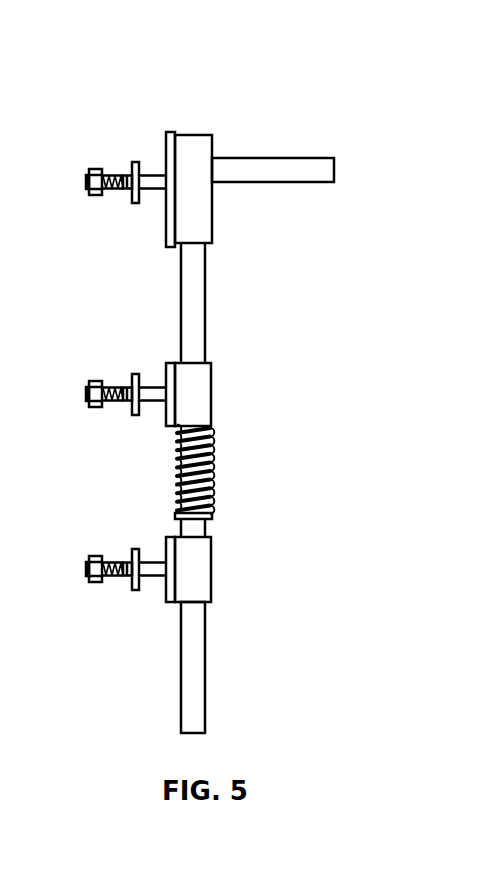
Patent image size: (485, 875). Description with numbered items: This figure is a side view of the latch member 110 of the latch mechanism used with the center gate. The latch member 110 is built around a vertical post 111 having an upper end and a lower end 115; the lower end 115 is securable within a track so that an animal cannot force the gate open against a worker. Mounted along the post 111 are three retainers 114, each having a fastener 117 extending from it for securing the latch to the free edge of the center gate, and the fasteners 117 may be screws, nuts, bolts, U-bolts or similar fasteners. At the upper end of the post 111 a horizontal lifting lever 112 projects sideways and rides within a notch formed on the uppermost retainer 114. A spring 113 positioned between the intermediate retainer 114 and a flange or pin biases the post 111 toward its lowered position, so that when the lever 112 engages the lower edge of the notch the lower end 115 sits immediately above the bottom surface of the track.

The latch member 110 is at (253, 51).
The post 111 is at (205, 302).
The horizontal lifting lever 112 is at (315, 177).
The spring 113 is at (207, 477).
The retainer 114 is at (193, 160).
The lower end 115 is at (205, 681).
The fastener 117 is at (93, 196).